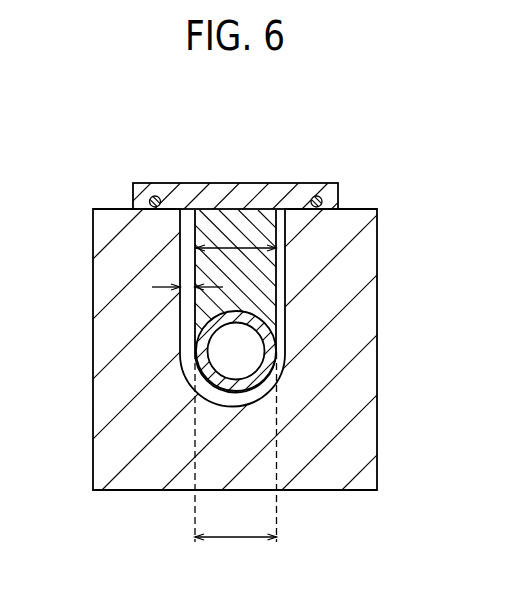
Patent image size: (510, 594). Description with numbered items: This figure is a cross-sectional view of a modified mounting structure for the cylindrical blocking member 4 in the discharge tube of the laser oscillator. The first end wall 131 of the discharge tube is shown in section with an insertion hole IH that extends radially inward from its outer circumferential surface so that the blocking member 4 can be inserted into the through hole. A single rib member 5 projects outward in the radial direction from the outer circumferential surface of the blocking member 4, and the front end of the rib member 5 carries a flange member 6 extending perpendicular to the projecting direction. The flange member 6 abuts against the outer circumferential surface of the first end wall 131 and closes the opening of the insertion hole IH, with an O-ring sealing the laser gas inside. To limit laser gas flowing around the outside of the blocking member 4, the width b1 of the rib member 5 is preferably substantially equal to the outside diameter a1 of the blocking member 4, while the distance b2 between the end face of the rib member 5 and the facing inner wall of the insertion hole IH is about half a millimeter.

The first end wall 131 is at (342, 222).
The flange member 6 is at (192, 188).
The rib member 5 is at (257, 230).
The blocking member 4 is at (266, 352).
The dimension of the rib member in the width direction b1 is at (238, 246).
The distance between the end face of the rib member and the inner wall of the insert b2 is at (183, 296).
The insertion hole IH is at (176, 287).
The outside diameter of the blocking member a1 is at (236, 459).